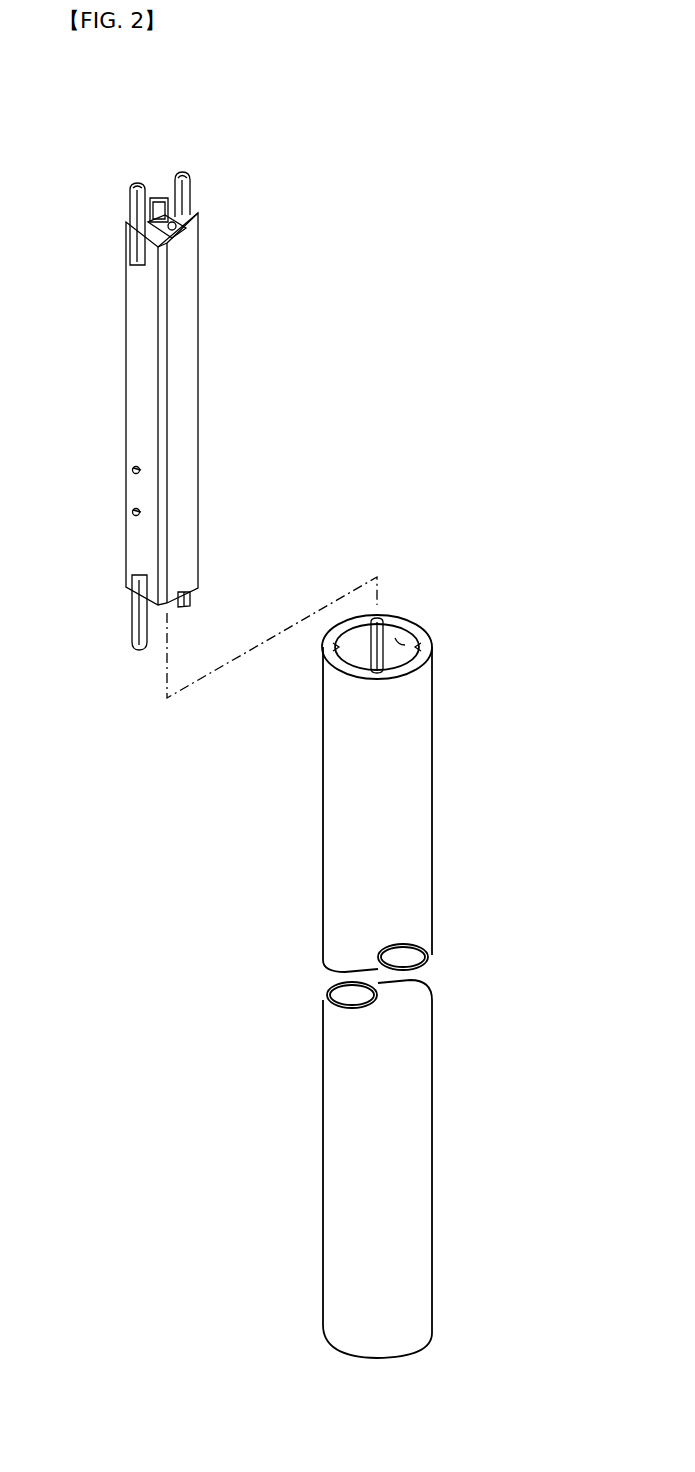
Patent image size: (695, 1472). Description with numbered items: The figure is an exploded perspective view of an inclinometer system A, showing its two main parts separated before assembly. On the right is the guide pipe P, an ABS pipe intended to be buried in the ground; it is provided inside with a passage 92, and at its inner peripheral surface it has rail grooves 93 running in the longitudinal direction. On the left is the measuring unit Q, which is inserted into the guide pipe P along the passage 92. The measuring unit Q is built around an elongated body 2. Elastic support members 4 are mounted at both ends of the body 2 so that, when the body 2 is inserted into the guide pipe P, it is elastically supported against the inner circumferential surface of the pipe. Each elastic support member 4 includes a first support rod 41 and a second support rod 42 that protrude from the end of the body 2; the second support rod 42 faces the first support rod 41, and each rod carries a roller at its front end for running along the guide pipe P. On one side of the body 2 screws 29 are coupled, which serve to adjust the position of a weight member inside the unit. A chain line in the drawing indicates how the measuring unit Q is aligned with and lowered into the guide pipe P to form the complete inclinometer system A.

The body 2 is at (192, 487).
The elastic support member 4 is at (167, 410).
The first support rod 41 is at (192, 200).
The second support rod 42 is at (130, 215).
The screws 29 is at (132, 470).
The passage 92 is at (404, 624).
The rail grooves 93 is at (380, 616).
The measuring unit Q is at (207, 420).
The inclinometer system A is at (458, 375).
The guide pipe P is at (435, 952).